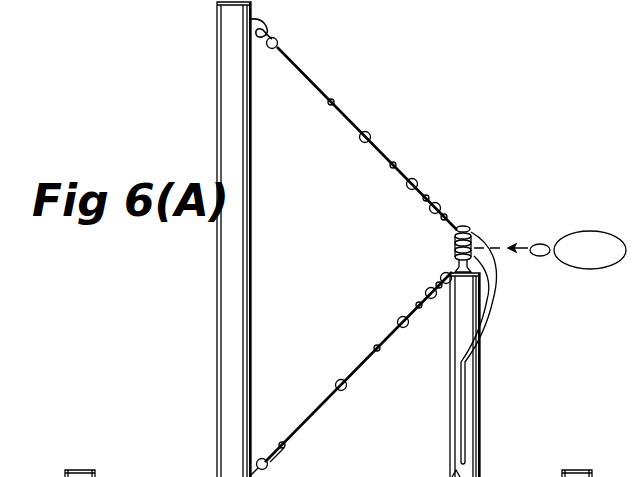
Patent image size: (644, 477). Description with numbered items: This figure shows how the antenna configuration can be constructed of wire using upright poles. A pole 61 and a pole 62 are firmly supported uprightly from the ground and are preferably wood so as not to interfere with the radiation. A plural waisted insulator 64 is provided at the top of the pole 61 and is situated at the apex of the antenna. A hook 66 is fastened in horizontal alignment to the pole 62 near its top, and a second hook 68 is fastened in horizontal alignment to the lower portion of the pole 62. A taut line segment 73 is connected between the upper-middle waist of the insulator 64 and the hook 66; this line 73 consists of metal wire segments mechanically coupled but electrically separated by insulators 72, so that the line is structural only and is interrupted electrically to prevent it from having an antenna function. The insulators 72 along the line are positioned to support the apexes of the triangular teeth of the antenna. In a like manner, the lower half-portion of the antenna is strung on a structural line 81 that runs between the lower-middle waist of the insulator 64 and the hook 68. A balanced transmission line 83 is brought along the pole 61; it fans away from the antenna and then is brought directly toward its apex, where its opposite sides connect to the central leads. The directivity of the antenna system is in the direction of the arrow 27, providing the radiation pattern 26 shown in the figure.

The pattern 26 is at (596, 232).
The arrow 27 is at (511, 253).
The pole 61 is at (480, 394).
The pole 62 is at (217, 272).
The plural waisted insulator 64 is at (468, 232).
The hook 66 is at (266, 28).
The hook 68 is at (259, 458).
The insulators 72 is at (274, 50).
The line segment 73 is at (285, 48).
The structural line 81 is at (272, 452).
The balanced transmission line 83 is at (488, 330).